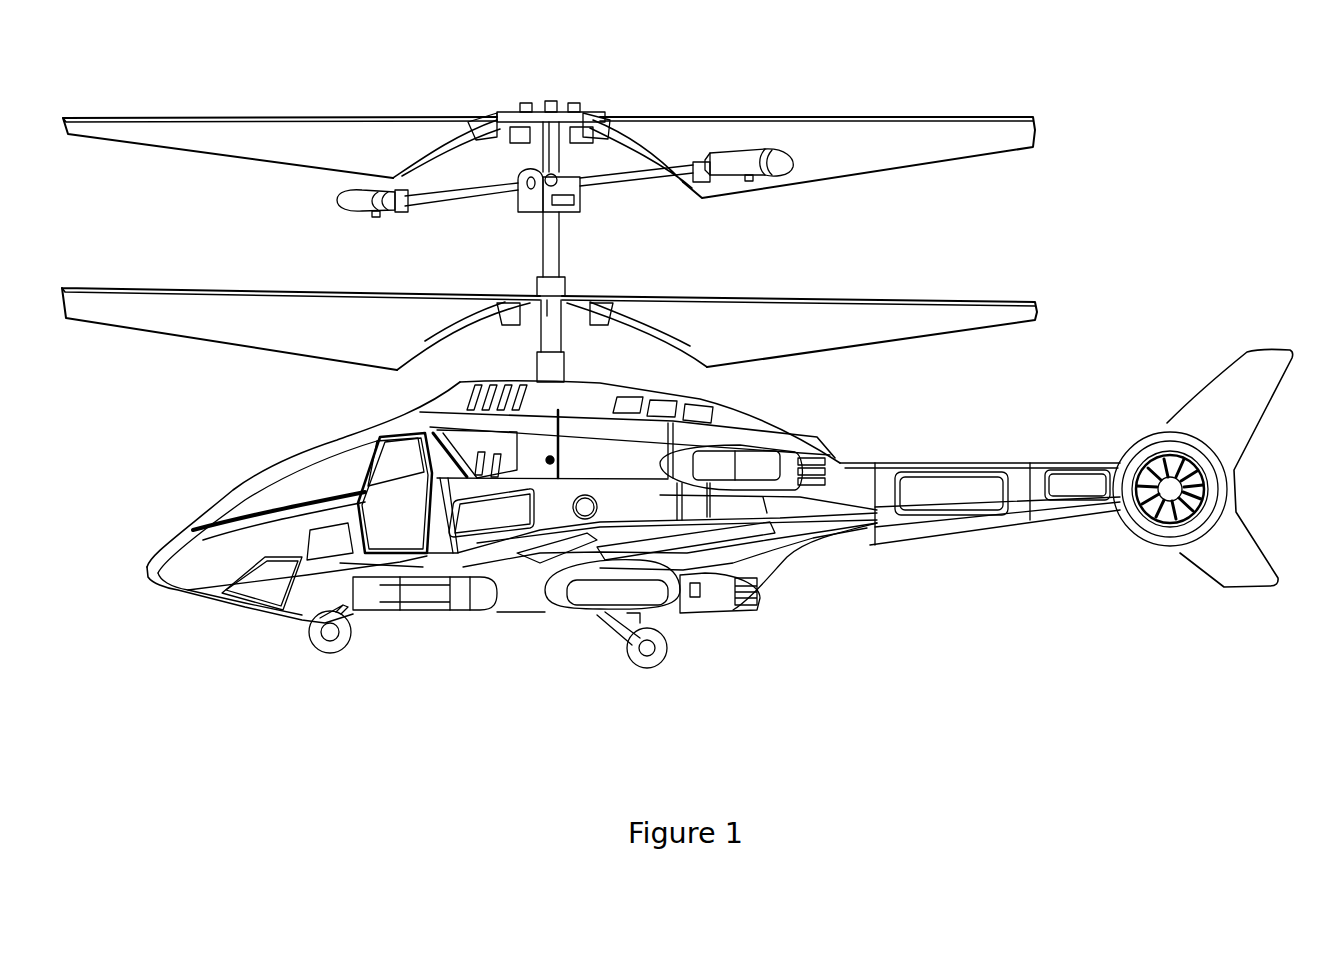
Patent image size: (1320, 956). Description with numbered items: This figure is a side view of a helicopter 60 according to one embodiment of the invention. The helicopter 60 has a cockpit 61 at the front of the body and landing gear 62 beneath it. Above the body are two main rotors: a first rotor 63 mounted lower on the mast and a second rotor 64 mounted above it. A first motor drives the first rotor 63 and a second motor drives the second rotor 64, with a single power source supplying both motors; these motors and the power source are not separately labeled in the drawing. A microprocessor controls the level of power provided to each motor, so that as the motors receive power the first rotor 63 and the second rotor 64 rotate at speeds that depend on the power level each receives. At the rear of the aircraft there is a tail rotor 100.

The helicopter 60 is at (180, 489).
The cockpit 61 is at (297, 453).
The landing gear 62 is at (613, 653).
The first rotor 63 is at (780, 270).
The second rotor 64 is at (800, 112).
The tail rotor 100 is at (1137, 512).